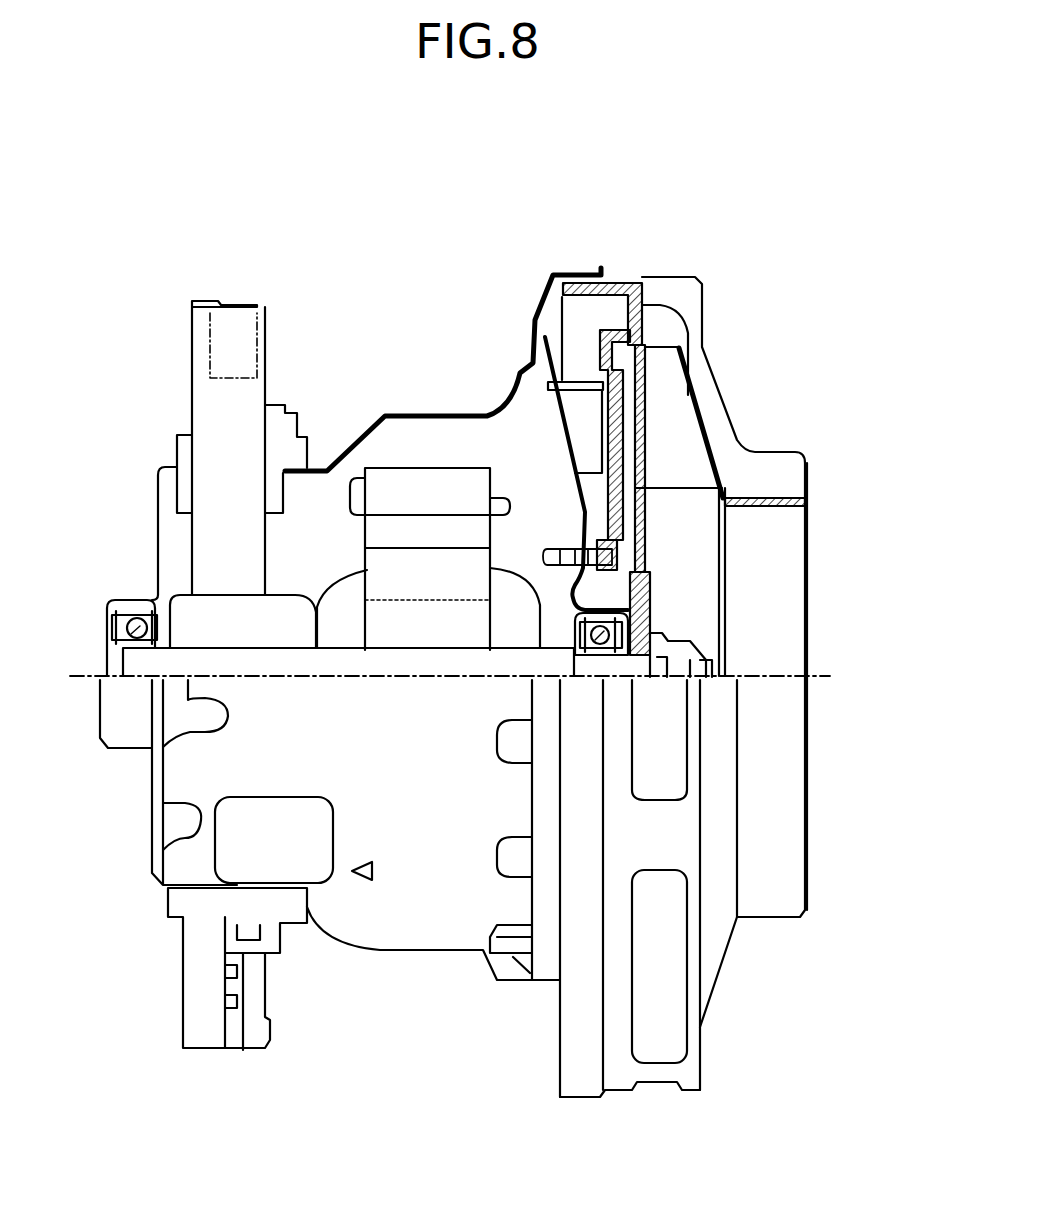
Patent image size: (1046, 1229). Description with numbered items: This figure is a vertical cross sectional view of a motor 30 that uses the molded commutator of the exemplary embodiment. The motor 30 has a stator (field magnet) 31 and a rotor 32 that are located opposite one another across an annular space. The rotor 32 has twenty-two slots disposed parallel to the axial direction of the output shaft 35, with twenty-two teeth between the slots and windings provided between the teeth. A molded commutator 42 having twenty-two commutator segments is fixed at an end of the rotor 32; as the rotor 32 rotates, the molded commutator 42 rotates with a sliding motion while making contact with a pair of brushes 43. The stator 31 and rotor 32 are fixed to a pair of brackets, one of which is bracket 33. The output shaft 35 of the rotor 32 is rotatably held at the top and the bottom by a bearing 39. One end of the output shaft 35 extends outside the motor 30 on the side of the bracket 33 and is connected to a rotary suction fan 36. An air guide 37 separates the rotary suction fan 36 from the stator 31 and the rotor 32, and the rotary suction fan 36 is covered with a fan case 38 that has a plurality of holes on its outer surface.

The motor 30 is at (172, 184).
The stator (field magnet) 31 is at (423, 500).
The rotor 32 is at (453, 625).
The bracket 33 is at (520, 375).
The output shaft 35 is at (407, 587).
The rotary suction fan 36 is at (712, 440).
The air guide 37 is at (587, 283).
The fan case 38 is at (640, 275).
The bearing 39 is at (110, 620).
The molded commutator 42 is at (397, 665).
The brushes 43 is at (210, 408).